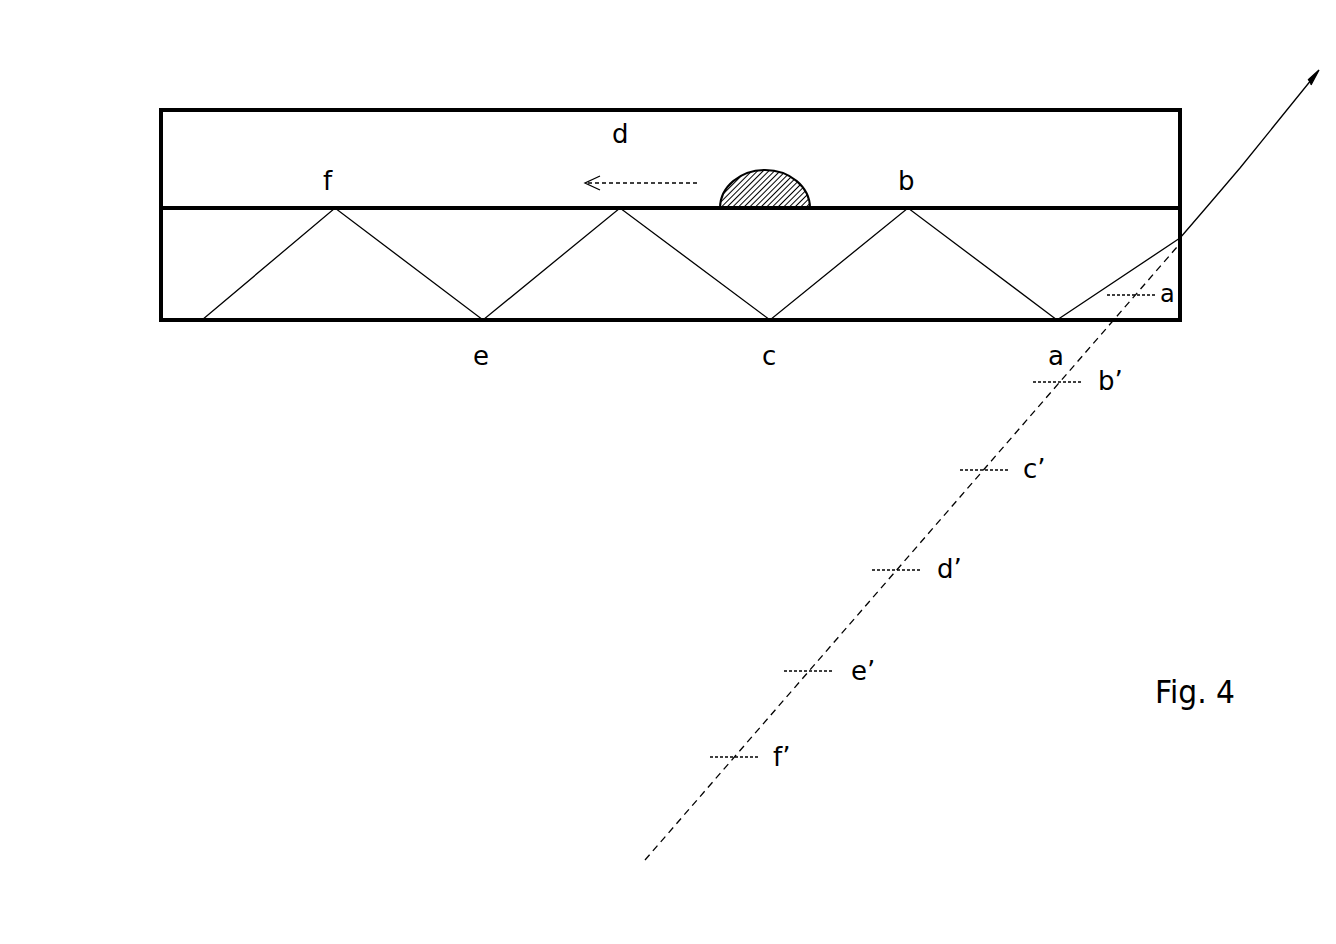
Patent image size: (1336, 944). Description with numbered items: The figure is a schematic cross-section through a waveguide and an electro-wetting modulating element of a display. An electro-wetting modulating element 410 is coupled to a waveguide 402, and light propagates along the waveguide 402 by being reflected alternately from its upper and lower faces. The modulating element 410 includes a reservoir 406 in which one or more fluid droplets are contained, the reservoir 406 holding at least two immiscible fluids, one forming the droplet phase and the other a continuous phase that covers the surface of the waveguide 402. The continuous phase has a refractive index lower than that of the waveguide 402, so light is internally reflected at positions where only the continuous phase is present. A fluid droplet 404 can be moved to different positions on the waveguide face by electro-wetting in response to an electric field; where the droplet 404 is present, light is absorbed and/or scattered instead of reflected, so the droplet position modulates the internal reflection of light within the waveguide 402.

The waveguide 402 is at (159, 268).
The fluid droplet 404 is at (790, 170).
The reservoir 406 is at (440, 150).
The electro-wetting modulating element 410 is at (159, 165).